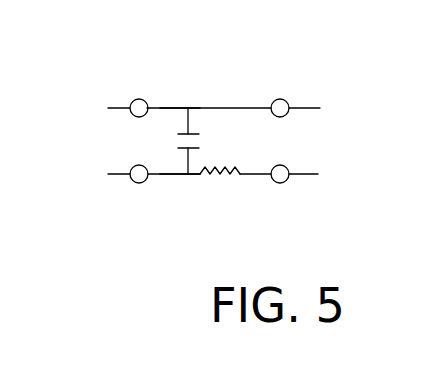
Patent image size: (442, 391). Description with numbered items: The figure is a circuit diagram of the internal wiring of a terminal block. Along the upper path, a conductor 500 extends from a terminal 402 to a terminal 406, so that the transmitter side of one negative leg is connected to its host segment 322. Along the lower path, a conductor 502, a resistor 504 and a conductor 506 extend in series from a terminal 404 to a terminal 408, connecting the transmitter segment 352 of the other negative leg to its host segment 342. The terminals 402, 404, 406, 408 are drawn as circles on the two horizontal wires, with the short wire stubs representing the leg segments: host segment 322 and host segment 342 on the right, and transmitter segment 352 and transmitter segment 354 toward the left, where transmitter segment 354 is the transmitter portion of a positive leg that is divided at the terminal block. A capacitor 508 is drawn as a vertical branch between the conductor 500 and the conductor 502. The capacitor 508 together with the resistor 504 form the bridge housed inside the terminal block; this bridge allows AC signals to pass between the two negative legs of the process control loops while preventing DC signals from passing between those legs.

The host segment 322 is at (308, 108).
The host segment 342 is at (318, 173).
The transmitter segment 352 is at (110, 176).
The transmitter segment 354 is at (112, 108).
The terminal 402 is at (138, 99).
The terminal 404 is at (140, 183).
The terminal 406 is at (280, 99).
The terminal 408 is at (287, 180).
The conductor 500 is at (168, 107).
The conductor 502 is at (177, 174).
The resistor 504 is at (237, 174).
The conductor 506 is at (263, 173).
The capacitor 508 is at (198, 143).